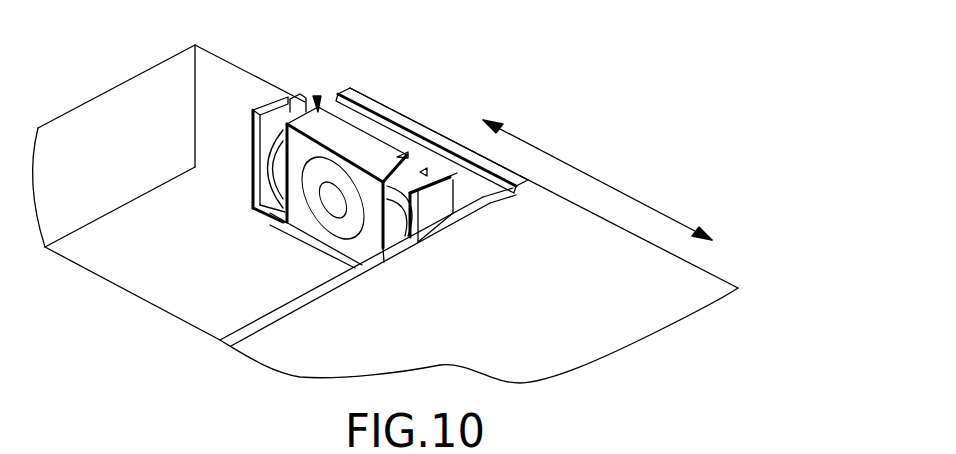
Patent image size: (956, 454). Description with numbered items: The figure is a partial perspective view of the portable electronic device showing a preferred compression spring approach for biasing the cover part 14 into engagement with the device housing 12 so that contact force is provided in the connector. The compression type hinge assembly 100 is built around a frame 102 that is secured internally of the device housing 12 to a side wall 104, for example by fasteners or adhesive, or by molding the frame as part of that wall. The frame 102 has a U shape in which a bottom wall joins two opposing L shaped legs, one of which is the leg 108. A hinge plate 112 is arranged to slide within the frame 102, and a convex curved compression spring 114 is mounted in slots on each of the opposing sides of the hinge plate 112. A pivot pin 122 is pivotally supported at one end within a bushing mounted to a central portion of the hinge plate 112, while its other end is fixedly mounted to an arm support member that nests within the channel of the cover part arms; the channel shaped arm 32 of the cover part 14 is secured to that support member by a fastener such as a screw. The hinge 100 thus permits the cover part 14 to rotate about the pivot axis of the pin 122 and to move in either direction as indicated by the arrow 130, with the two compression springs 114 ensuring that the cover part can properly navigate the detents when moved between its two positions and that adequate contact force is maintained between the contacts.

The device housing 12 is at (212, 50).
The cover part 14 is at (549, 339).
The channel shaped arm 32 is at (437, 138).
The compression type hinge assembly 100 is at (312, 121).
The frame 102 is at (305, 100).
The side wall 104 is at (257, 89).
The L shaped leg 108 is at (440, 210).
The hinge plate 112 is at (370, 137).
The convex curved compression spring 114 is at (277, 168).
The pivot pin 122 is at (332, 203).
The arrow 130 is at (588, 173).